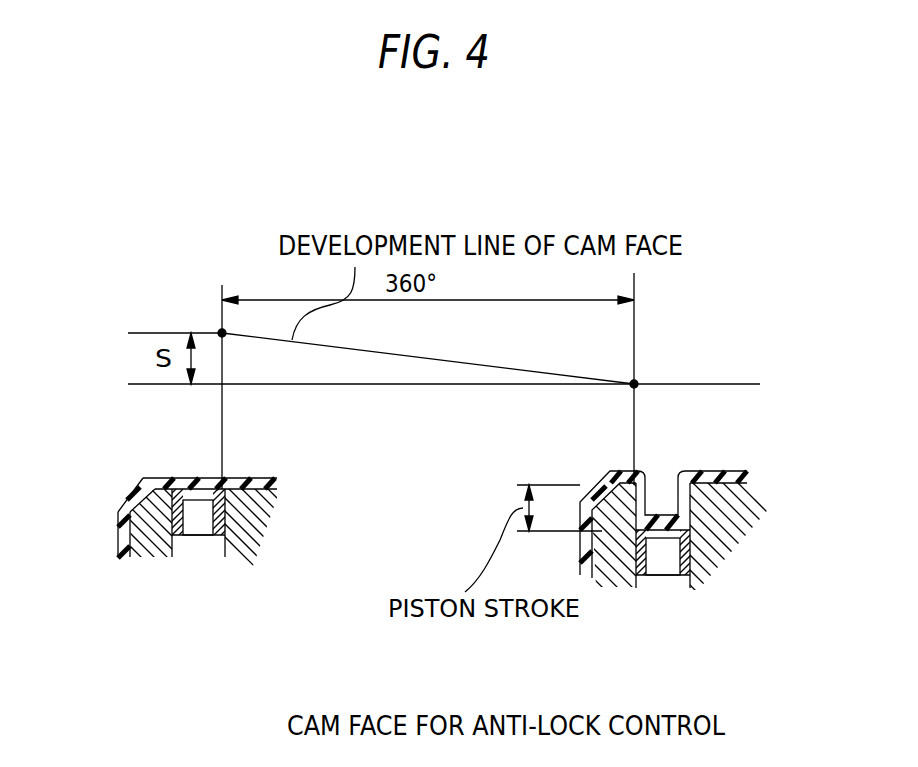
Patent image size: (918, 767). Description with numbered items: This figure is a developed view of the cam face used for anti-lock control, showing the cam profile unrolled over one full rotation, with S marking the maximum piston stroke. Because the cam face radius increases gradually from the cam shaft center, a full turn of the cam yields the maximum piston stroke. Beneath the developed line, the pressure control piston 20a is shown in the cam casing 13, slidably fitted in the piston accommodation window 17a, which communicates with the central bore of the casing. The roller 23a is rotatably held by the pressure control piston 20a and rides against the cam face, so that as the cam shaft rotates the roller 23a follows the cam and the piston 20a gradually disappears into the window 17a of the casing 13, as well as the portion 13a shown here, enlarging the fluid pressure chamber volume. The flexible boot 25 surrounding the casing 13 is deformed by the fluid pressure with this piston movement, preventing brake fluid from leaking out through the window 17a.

The flexible boot 25 is at (145, 478).
The pressure control piston 20a is at (200, 488).
The cylinder body 13a is at (147, 530).
The cam casing 13 is at (722, 515).
The piston accommodation window 17a is at (187, 530).
The roller 23a is at (198, 525).